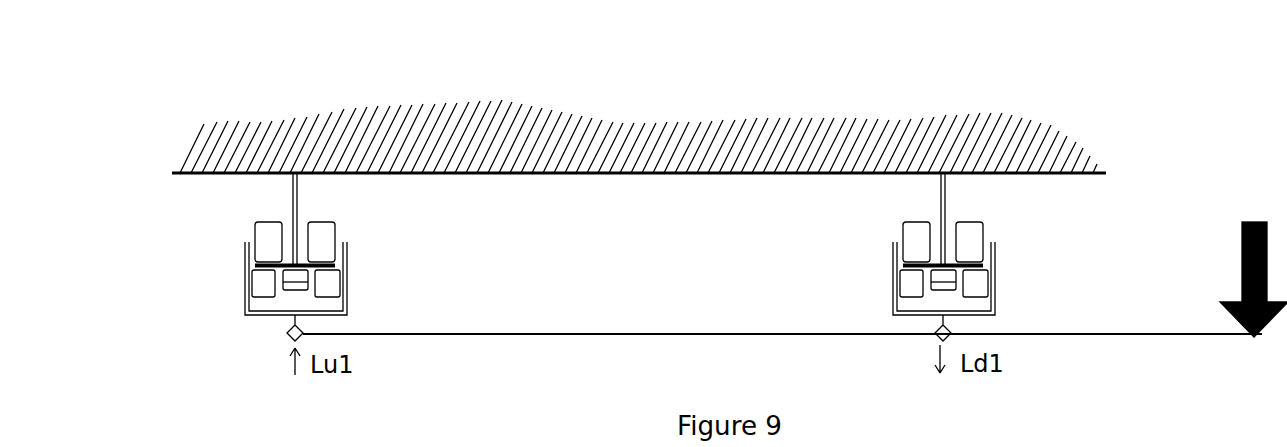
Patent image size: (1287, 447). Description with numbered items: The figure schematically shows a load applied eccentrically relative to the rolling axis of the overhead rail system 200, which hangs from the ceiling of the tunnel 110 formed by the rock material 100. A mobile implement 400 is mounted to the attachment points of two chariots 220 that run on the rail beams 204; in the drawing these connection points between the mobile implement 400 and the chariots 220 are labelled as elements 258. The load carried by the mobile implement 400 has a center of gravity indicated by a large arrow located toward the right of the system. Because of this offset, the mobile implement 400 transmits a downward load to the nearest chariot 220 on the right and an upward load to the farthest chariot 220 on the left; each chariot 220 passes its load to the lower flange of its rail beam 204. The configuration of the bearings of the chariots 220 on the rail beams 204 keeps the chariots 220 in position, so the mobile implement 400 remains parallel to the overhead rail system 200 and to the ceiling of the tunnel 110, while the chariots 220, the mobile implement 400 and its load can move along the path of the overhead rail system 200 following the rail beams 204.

The rock material 100 is at (614, 127).
The tunnel 110 is at (678, 224).
The overhead rail system 200 is at (1137, 188).
The rail beam 204 is at (300, 200).
The chariot 220 is at (381, 253).
The connector / attachment point 258 is at (287, 334).
The mobile implement 400 is at (607, 333).